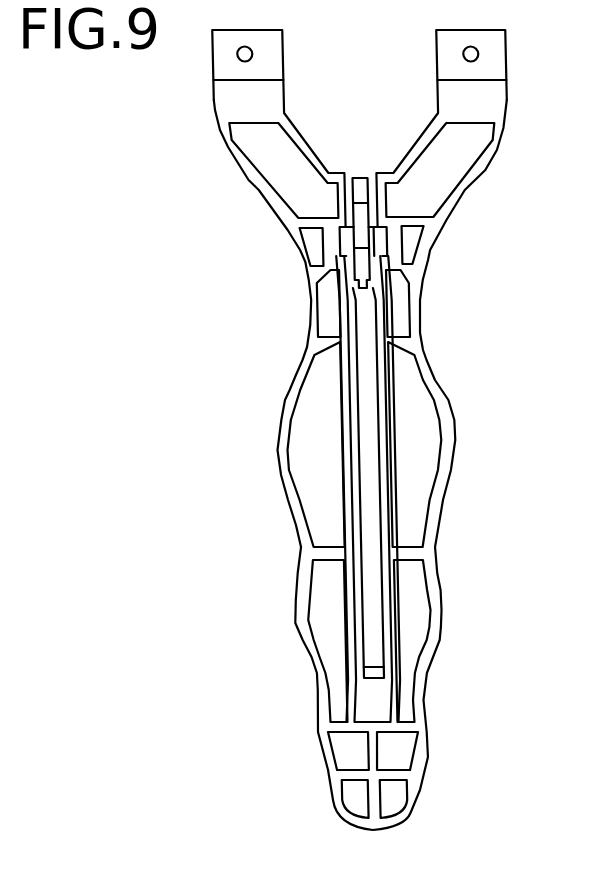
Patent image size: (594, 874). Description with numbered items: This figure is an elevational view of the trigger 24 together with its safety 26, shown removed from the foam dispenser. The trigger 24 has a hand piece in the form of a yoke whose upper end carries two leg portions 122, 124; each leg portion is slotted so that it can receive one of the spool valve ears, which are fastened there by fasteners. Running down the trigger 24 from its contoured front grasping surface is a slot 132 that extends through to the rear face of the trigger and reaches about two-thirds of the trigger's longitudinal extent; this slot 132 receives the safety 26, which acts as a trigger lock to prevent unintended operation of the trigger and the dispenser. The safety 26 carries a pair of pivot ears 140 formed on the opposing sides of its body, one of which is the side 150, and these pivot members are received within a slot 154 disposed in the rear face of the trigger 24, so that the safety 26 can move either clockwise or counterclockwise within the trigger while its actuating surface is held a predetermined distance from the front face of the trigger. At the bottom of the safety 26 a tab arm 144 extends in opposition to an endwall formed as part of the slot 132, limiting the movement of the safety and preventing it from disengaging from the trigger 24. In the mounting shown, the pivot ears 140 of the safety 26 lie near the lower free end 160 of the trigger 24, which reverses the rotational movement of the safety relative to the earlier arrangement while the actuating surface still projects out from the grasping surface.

The trigger 24 is at (310, 553).
The safety 26 is at (367, 473).
The leg portion 122 is at (497, 61).
The leg portion 124 is at (220, 67).
The slot 132 is at (340, 341).
The pivot ears 140 is at (370, 240).
The tab arm 144 is at (372, 672).
The side of the safety body 150 is at (367, 365).
The slot 154 is at (402, 265).
The lower free end 160 is at (407, 808).